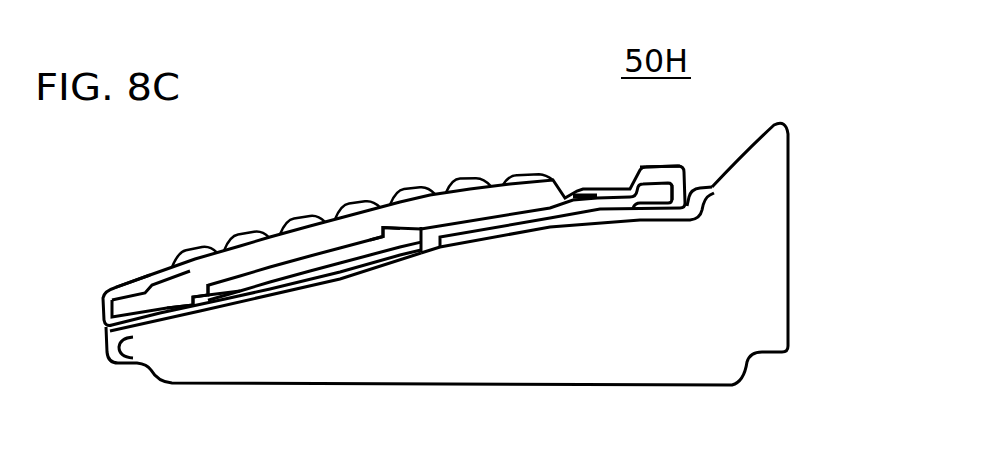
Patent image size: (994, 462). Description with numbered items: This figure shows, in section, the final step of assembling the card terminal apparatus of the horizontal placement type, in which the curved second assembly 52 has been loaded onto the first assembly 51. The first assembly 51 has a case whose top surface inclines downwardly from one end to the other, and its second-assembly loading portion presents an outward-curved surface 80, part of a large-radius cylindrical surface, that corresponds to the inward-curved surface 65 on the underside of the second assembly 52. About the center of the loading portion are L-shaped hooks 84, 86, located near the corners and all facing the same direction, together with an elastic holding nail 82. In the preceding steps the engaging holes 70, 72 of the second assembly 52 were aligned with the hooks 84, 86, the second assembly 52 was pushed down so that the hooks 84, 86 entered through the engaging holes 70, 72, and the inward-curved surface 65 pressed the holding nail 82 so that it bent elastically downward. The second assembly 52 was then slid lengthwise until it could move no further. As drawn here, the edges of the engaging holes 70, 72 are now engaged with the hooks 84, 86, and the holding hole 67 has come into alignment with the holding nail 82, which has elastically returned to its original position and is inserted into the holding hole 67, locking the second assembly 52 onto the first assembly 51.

The first assembly 51 is at (792, 229).
The second assembly 52 is at (325, 200).
The inward-curved surface 65 is at (298, 274).
The holding hole 67 is at (415, 232).
The engaging hole 70 is at (620, 198).
The engaging hole 72 is at (197, 291).
The surface 80 is at (277, 270).
The holding nail 82 is at (421, 253).
The hook 84 is at (583, 187).
The hook 86 is at (157, 272).